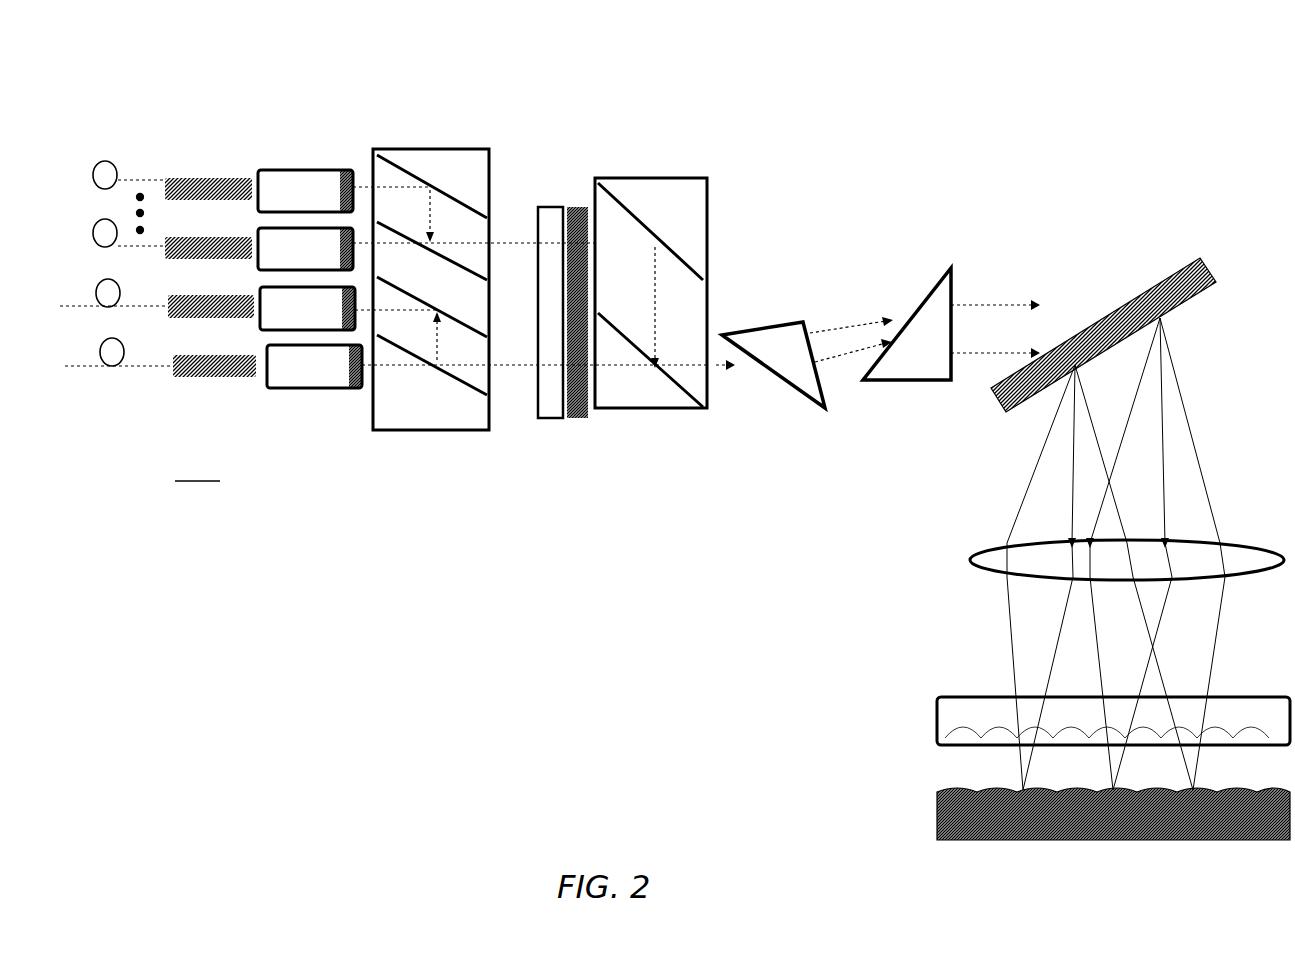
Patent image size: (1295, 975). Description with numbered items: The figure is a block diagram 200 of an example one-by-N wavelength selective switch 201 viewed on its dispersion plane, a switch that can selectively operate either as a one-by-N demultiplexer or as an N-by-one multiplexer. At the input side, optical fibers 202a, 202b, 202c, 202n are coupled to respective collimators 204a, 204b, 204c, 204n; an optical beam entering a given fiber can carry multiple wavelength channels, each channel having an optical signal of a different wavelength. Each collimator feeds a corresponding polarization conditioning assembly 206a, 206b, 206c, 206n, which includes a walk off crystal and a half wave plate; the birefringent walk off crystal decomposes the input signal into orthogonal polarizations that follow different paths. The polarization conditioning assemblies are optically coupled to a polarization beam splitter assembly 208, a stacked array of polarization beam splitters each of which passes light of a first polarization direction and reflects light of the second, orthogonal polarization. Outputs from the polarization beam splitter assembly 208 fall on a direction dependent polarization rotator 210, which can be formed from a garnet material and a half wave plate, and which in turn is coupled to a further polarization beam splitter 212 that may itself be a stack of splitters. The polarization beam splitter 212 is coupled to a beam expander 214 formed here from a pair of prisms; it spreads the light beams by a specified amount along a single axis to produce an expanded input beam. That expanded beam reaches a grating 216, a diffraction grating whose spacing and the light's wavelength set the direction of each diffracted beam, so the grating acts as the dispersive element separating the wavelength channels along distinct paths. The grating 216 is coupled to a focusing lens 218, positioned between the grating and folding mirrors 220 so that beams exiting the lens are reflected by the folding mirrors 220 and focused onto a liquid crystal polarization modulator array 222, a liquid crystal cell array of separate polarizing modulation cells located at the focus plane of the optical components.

The block diagram 200 is at (167, 84).
The 1×N WSS 201 is at (348, 571).
The optical fiber 202a is at (126, 386).
The optical fiber 202b is at (108, 326).
The optical fiber 202c is at (105, 268).
The optical fiber 202n is at (106, 205).
The collimator 204a is at (228, 410).
The collimator 204b is at (234, 340).
The collimator 204c is at (233, 283).
The collimator 204n is at (234, 225).
The polarization conditioning assembly 206a is at (329, 375).
The polarization conditioning assembly 206b is at (322, 317).
The polarization conditioning assembly 206c is at (320, 258).
The polarization conditioning assembly 206n is at (322, 200).
The polarization beam splitter assembly 208 is at (437, 142).
The direction dependent polarization rotator 210 is at (565, 188).
The polarization beam splitter 212 is at (650, 168).
The beam expander 214 is at (848, 260).
The grating 216 is at (1199, 258).
The focusing lens 218 is at (972, 545).
The folding mirrors 220 is at (937, 694).
The liquid crystal polarization modulator array 222 is at (929, 790).